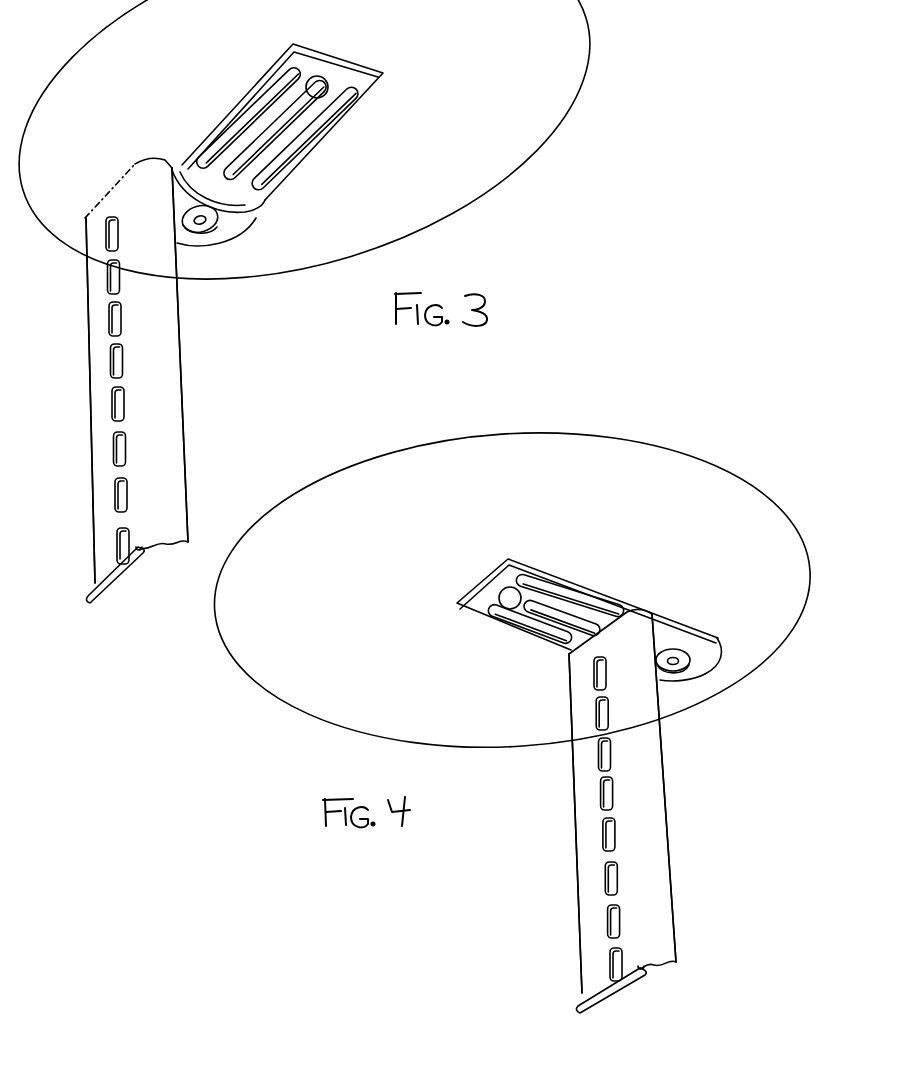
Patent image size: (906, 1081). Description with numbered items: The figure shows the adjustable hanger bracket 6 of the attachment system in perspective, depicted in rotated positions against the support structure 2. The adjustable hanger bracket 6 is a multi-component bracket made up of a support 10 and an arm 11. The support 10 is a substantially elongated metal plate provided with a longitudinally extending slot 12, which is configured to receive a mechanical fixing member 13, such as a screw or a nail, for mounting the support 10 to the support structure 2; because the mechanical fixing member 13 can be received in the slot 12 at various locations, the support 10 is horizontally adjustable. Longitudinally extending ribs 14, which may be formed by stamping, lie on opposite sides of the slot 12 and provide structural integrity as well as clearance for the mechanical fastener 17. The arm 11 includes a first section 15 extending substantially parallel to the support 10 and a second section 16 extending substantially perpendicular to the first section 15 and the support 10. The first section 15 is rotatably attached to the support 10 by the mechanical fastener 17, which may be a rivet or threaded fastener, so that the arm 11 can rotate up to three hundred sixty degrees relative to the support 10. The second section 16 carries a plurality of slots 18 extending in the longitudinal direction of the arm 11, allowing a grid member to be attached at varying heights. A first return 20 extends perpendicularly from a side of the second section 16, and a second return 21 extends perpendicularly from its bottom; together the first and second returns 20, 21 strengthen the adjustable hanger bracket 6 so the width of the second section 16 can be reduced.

In FIG. 3, the support structure 2 is at (553, 33).
In FIG. 4, the support structure 2 is at (708, 487).
In FIG. 3, the adjustable hanger bracket 6 is at (196, 497).
In FIG. 4, the adjustable hanger bracket 6 is at (572, 920).
In FIG. 3, the support 10 is at (298, 57).
In FIG. 4, the support 10 is at (505, 573).
In FIG. 3, the arm 11 is at (128, 192).
In FIG. 4, the arm 11 is at (580, 662).
In FIG. 3, the slot 12 is at (275, 132).
In FIG. 4, the slot 12 is at (572, 617).
In FIG. 3, the mechanical fixing member 13 is at (318, 88).
In FIG. 4, the mechanical fixing member 13 is at (508, 598).
In FIG. 3, the ribs 14 is at (270, 90).
In FIG. 4, the ribs 14 is at (547, 590).
In FIG. 3, the first section 15 is at (216, 238).
In FIG. 4, the first section 15 is at (700, 648).
In FIG. 3, the second section 16 is at (142, 382).
In FIG. 4, the second section 16 is at (630, 875).
In FIG. 3, the mechanical fastener 17 is at (217, 218).
In FIG. 4, the mechanical fastener 17 is at (675, 650).
In FIG. 3, the slots 18 is at (117, 327).
In FIG. 4, the slots 18 is at (600, 805).
In FIG. 3, the first return 20 is at (178, 442).
In FIG. 4, the first return 20 is at (660, 800).
In FIG. 3, the second return 21 is at (123, 573).
In FIG. 4, the second return 21 is at (577, 1000).